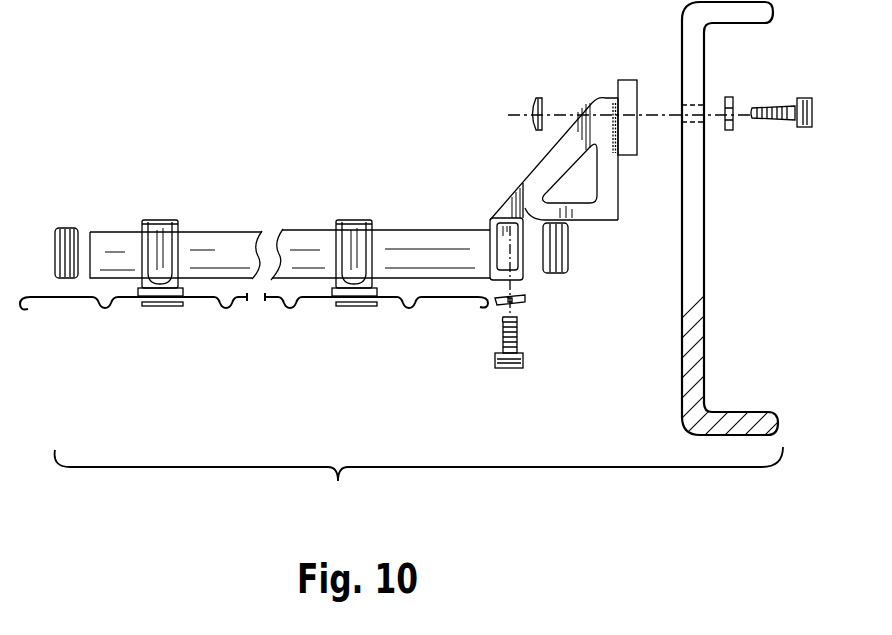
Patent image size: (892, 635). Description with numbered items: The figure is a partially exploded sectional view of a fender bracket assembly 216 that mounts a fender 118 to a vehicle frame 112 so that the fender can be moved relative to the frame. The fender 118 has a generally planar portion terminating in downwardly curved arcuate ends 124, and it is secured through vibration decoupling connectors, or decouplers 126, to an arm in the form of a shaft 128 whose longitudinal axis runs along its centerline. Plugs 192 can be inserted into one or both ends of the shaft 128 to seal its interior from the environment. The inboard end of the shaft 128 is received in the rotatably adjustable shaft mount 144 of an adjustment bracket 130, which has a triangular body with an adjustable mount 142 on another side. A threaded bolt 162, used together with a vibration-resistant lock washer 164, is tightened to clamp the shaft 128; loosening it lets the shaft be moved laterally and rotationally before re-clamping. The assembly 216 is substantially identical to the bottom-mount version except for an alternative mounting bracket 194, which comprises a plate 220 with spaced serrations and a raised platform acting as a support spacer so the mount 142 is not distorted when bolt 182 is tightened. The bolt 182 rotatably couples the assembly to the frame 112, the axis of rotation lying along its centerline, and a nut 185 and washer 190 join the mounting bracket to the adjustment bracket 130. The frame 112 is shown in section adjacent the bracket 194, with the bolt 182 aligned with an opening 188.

The frame 112 is at (702, 283).
The fender 118 is at (305, 302).
The arcuate ends 124 is at (108, 307).
The decouplers 126 is at (168, 216).
The shaft 128 is at (239, 226).
The adjustment bracket 130 is at (538, 166).
The adjustable mount 142 is at (620, 167).
The shaft mount 144 is at (497, 242).
The bolt 162 is at (537, 342).
The lock washer 164 is at (528, 300).
The bolt 182 is at (781, 104).
The nut 185 is at (535, 100).
The hole 188 is at (700, 121).
The washer 190 is at (729, 96).
The plugs 192 is at (63, 227).
The mounting bracket 194 is at (632, 78).
The fender bracket assembly 216 is at (419, 479).
The plate 220 is at (623, 92).